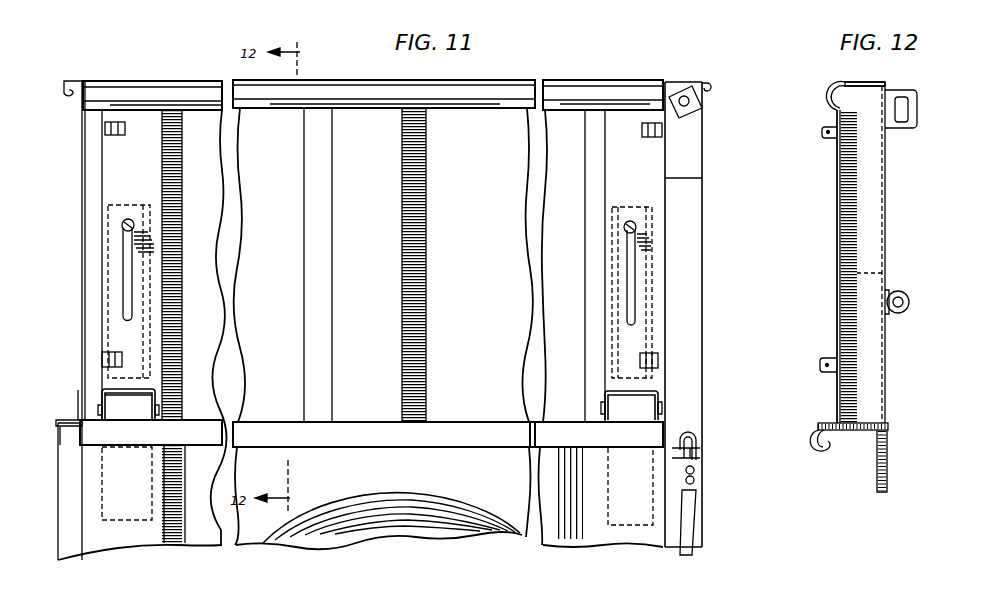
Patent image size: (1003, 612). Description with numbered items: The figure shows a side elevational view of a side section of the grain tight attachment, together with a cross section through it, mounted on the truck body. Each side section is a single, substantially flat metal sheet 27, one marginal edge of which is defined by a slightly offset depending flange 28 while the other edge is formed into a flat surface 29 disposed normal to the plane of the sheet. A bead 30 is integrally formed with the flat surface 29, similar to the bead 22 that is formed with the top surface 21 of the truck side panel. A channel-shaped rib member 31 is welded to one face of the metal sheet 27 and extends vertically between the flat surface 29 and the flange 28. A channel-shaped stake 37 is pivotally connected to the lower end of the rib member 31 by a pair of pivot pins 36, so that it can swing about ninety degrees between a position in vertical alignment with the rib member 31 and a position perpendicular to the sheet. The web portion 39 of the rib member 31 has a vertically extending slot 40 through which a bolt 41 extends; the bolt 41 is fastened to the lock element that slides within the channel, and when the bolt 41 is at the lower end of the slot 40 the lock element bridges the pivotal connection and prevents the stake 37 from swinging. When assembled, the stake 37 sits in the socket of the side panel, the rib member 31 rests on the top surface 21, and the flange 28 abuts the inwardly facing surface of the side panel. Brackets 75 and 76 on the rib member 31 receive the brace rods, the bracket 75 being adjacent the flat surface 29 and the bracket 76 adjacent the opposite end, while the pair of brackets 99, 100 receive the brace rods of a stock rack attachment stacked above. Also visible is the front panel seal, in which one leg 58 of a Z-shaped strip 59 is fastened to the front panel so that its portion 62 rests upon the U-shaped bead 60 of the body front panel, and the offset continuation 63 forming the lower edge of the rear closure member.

In FIG. 12, the top surface 21 is at (858, 432).
In FIG. 12, the bead 22 is at (820, 450).
In FIG. 12, the metal sheet 27 is at (887, 200).
In FIG. 12, the depending flange 28 is at (890, 440).
In FIG. 12, the flat surface 29 is at (860, 82).
In FIG. 12, the bead 30 is at (823, 96).
In FIG. 12, the channel-shaped rib member 31 is at (835, 203).
In FIG. 11, the pivot pin 36 is at (158, 405).
In FIG. 11, the channel-shaped stake 37 is at (118, 412).
In FIG. 11, the web portion 39 is at (128, 186).
In FIG. 11, the vertically extending slot 40 is at (127, 265).
In FIG. 11, the bolt 41 is at (122, 225).
In FIG. 11, the leg 58 is at (80, 401).
In FIG. 11, the Z-shaped strip 59 is at (30, 420).
In FIG. 11, the U-shaped bead 60 is at (57, 428).
In FIG. 11, the portion 62 is at (62, 432).
In FIG. 11, the offset continuation 63 is at (700, 437).
In FIG. 11, the bracket 75 is at (114, 135).
In FIG. 12, the bracket 75 is at (822, 132).
In FIG. 11, the bracket 76 is at (102, 357).
In FIG. 12, the bracket 76 is at (820, 368).
In FIG. 12, the bracket 99 is at (915, 95).
In FIG. 12, the bracket 100 is at (910, 298).